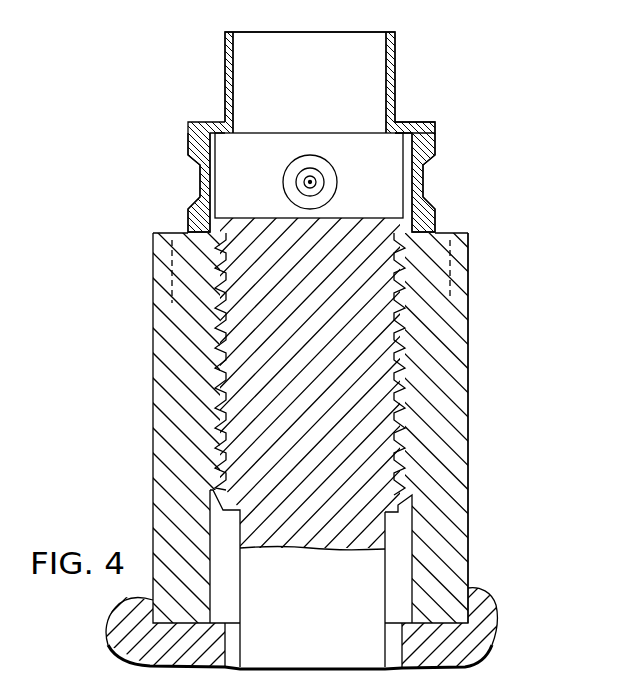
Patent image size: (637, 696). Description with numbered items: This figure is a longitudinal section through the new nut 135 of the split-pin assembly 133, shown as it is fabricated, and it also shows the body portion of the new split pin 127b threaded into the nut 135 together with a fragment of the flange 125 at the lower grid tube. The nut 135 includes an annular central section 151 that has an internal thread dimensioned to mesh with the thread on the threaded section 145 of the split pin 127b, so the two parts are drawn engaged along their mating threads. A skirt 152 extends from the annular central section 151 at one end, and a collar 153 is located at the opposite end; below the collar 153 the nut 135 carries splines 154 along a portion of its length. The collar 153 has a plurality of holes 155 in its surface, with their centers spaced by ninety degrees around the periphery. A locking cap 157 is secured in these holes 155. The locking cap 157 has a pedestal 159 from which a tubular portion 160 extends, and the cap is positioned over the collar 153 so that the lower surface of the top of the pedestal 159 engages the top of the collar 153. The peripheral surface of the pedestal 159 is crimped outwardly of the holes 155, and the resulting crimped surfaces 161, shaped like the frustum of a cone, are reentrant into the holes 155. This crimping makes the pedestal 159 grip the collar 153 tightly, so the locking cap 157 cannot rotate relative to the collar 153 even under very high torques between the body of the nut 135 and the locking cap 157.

The base 125 is at (110, 618).
The split pin 127b is at (250, 348).
The split-pin assembly 133 is at (135, 356).
The nut 135 is at (475, 460).
The threaded section 145 is at (388, 342).
The annular central section 151 is at (470, 410).
The skirt 152 is at (450, 567).
The collar 153 is at (200, 222).
The splines 154 is at (463, 233).
The holes 155 is at (190, 157).
The locking cap 157 is at (404, 100).
The pedestal 159 is at (403, 122).
The tubular portion 160 is at (226, 70).
The crimped surfaces 161 is at (428, 160).